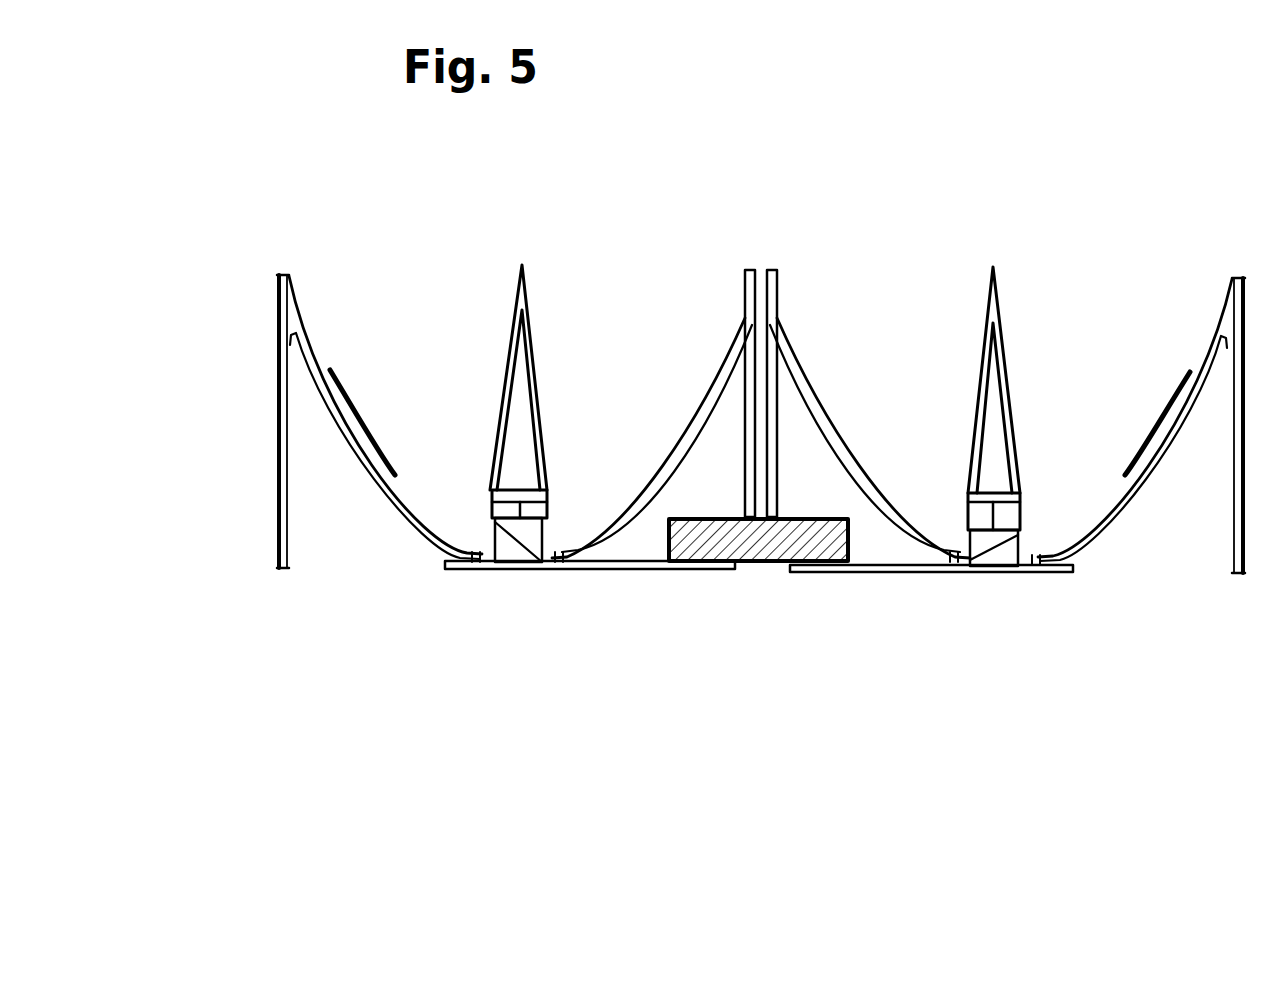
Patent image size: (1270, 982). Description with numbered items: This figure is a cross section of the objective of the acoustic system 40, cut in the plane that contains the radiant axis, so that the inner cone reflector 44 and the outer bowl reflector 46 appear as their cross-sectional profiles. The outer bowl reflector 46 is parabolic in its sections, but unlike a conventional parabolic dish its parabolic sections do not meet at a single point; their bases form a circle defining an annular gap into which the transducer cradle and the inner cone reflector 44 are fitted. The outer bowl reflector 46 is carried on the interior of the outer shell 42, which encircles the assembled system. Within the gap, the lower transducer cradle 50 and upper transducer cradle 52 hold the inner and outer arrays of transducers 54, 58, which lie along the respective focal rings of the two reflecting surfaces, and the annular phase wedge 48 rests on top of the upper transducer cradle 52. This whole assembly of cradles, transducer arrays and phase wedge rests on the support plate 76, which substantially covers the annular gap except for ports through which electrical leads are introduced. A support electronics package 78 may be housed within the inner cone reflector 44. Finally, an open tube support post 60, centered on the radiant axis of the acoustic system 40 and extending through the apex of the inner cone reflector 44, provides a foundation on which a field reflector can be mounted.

The acoustic system 40 is at (482, 655).
The outer shell 42 is at (277, 418).
The inner cone reflector 44 is at (761, 440).
The outer bowl reflector 46 is at (1138, 425).
The annular phase wedge 48 is at (513, 312).
The lower transducer cradle 50 is at (1021, 500).
The upper transducer cradle 52 is at (965, 490).
The inner array of transducers 54 is at (492, 466).
The outer array of transducers 58 is at (548, 505).
The open tube support post 60 is at (745, 283).
The support plate 76 is at (840, 573).
The support electronics package 78 is at (707, 673).